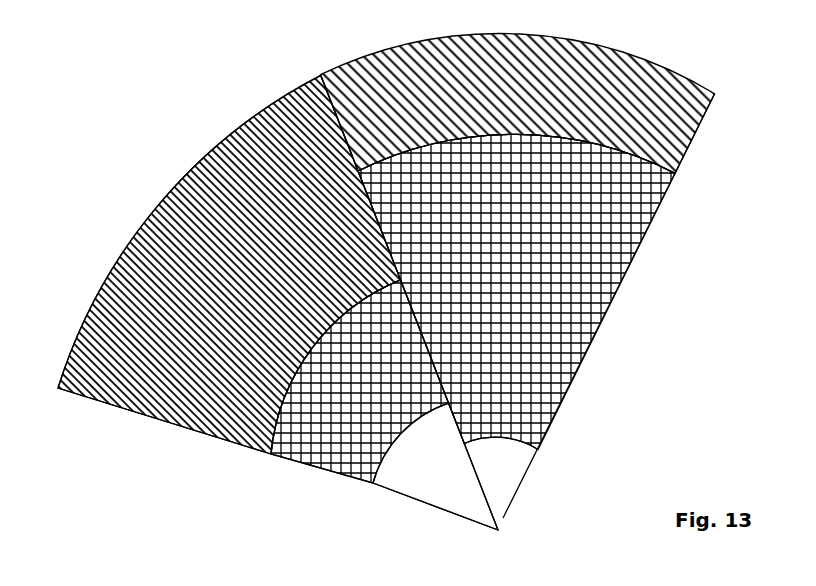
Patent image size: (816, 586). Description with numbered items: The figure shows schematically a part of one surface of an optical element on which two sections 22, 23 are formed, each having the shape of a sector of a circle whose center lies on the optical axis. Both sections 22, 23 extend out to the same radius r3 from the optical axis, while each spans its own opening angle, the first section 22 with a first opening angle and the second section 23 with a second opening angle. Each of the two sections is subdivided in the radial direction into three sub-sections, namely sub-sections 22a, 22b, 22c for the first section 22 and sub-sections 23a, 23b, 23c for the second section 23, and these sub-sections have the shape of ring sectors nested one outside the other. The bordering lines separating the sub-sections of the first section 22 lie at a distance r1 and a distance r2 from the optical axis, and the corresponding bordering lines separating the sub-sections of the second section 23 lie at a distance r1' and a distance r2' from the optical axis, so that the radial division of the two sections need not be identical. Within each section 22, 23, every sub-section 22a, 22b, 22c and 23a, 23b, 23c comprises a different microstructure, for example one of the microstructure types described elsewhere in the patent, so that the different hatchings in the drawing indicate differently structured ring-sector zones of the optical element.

The section 22 is at (273, 318).
The sub-section 22a is at (423, 502).
The sub-section 22b is at (302, 456).
The sub-section 22c is at (153, 421).
The section 23 is at (544, 300).
The sub-section 23a is at (512, 487).
The sub-section 23b is at (628, 348).
The sub-section 23c is at (693, 135).
The distance of bordering line r1 is at (386, 464).
The distance of bordering line r2 is at (310, 390).
The radius r3 is at (50, 383).
The distance of bordering line r1' is at (545, 482).
The distance of bordering line r2' is at (557, 196).